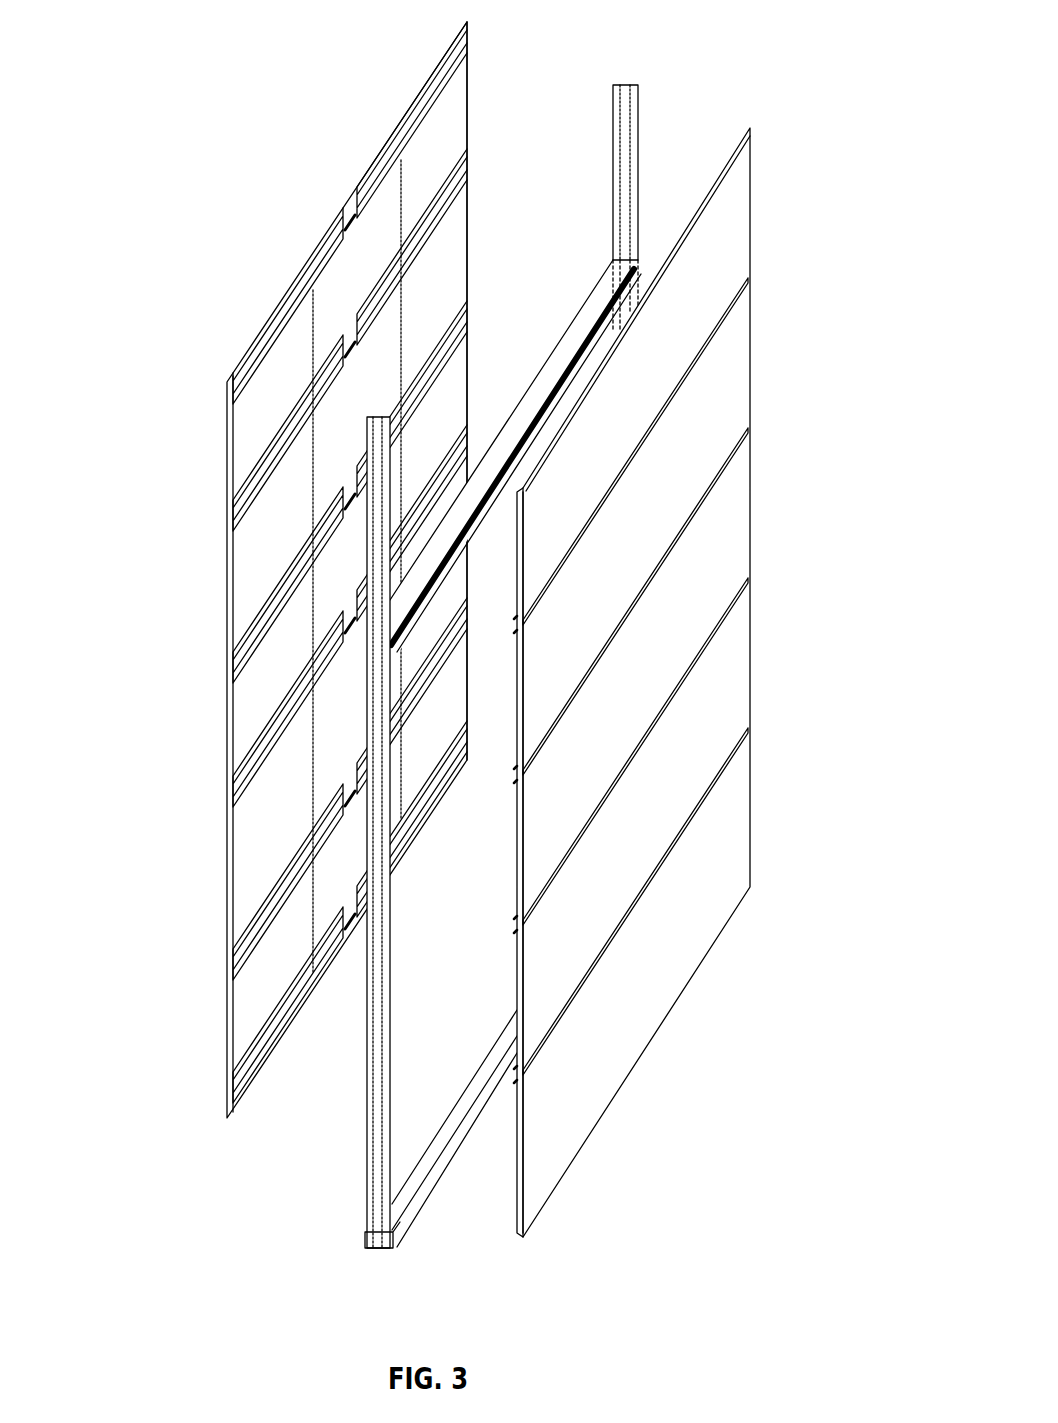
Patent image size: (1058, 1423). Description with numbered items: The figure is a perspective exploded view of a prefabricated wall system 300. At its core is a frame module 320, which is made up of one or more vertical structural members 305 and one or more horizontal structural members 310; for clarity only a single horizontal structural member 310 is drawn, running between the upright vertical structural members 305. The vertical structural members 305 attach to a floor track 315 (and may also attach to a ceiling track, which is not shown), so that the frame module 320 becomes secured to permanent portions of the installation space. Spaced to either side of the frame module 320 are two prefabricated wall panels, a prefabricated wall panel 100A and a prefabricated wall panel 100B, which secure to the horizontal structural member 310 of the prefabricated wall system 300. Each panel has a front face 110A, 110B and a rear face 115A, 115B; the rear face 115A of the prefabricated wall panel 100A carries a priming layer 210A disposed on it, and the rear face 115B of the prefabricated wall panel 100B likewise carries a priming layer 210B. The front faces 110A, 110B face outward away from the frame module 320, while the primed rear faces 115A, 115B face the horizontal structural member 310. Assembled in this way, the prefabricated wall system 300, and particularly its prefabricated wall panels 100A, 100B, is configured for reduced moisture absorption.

The prefabricated wall system 300 is at (243, 132).
The prefabricated wall panel 100A is at (677, 647).
The prefabricated wall panel 100B is at (338, 570).
The front face 110A is at (710, 295).
The front face 110B is at (286, 371).
The rear face 115A is at (591, 441).
The rear face 115B is at (447, 116).
The priming layer 210A is at (720, 234).
The priming layer 210B is at (250, 443).
The vertical structural member 305 is at (630, 160).
The horizontal structural member 310 is at (590, 311).
The floor track 315 is at (436, 1158).
The frame module 320 is at (477, 688).